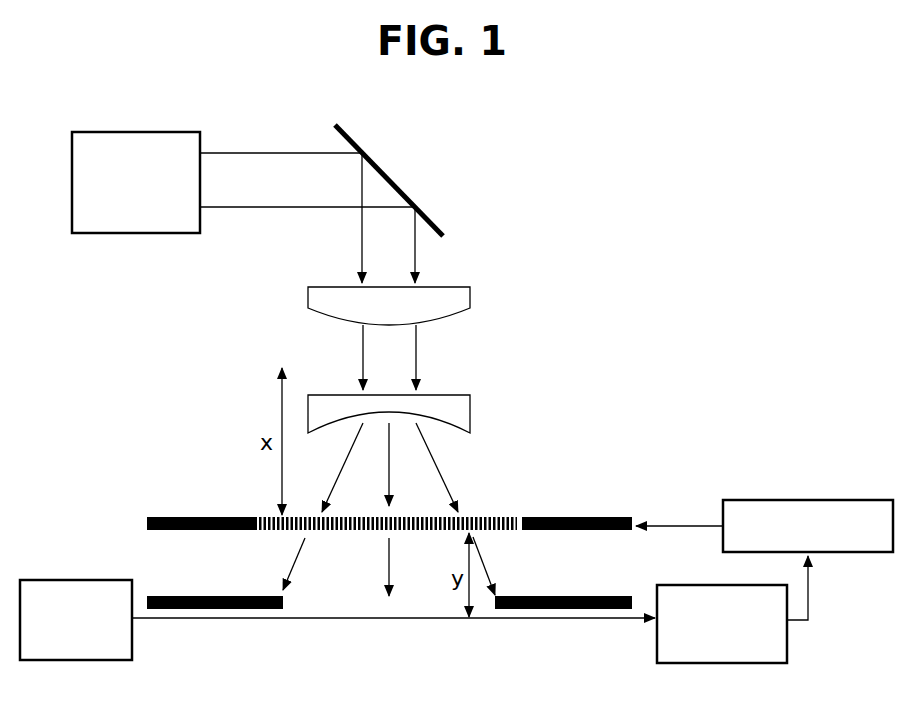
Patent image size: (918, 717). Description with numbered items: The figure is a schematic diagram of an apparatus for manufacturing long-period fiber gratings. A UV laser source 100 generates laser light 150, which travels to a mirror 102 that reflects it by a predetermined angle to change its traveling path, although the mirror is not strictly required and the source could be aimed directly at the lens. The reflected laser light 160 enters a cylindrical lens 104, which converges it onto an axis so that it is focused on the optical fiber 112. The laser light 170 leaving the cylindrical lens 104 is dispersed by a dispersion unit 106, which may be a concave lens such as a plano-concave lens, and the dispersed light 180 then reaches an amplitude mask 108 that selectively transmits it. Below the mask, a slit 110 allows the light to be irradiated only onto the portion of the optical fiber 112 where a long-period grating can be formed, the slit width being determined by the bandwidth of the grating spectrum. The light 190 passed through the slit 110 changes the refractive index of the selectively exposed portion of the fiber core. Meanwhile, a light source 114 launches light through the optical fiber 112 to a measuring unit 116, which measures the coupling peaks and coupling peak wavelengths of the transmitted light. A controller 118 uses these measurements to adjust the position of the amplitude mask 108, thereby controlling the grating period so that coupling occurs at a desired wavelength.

The UV laser source 100 is at (132, 233).
The mirror 102 is at (387, 173).
The cylindrical lens 104 is at (470, 295).
The dispersion unit 106 is at (470, 403).
The amplitude mask 108 is at (585, 515).
The slit 110 is at (568, 596).
The optical fiber 112 is at (357, 618).
The light source 114 is at (67, 660).
The measuring unit 116 is at (717, 663).
The controller 118 is at (803, 500).
The laser light 150 is at (258, 207).
The reflected laser light 160 is at (417, 253).
The laser light passed through the cylindrical lens 170 is at (416, 348).
The diverging beam 180 is at (438, 470).
The light passed through the slit 190 is at (387, 564).